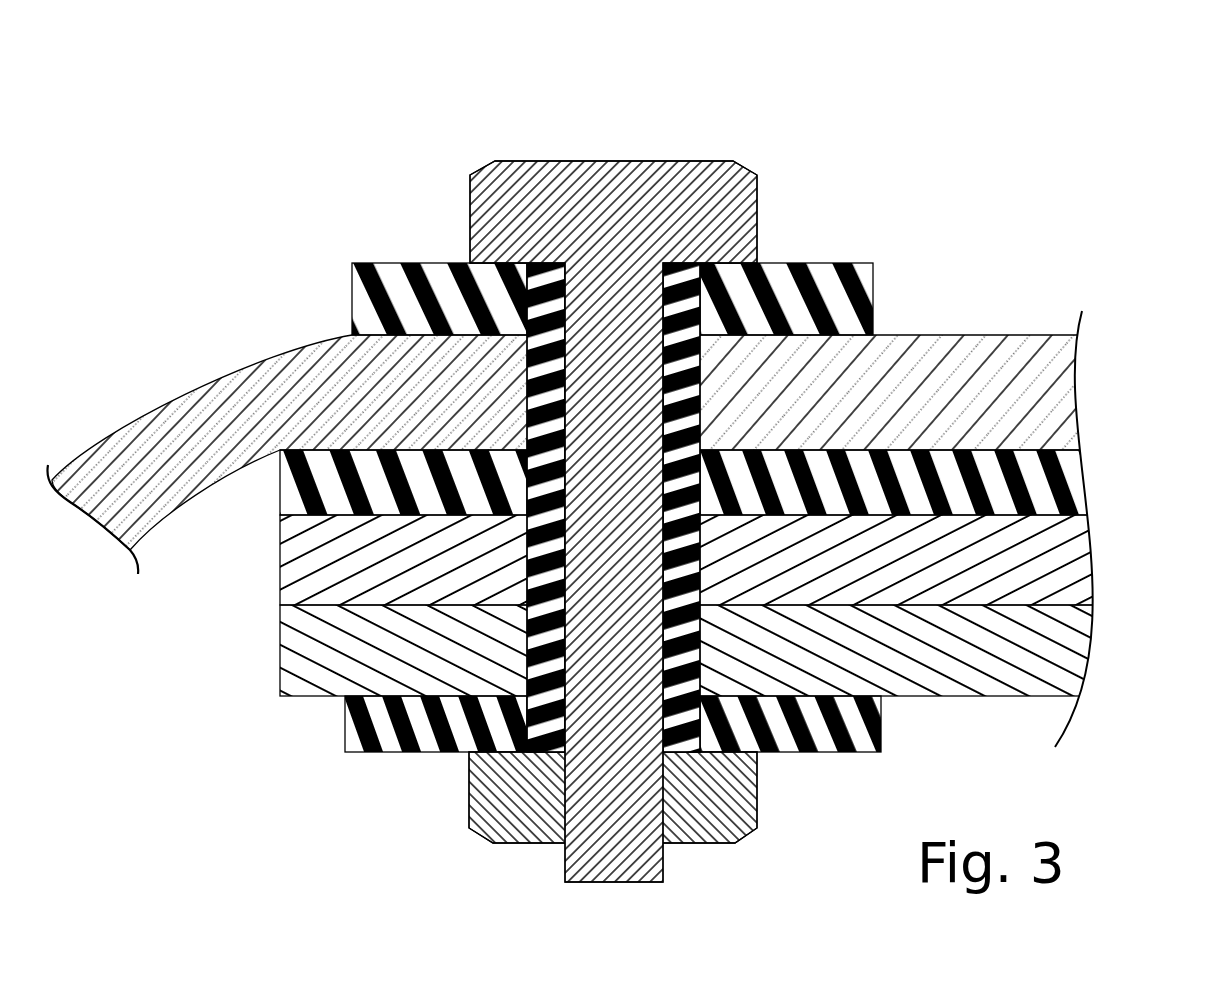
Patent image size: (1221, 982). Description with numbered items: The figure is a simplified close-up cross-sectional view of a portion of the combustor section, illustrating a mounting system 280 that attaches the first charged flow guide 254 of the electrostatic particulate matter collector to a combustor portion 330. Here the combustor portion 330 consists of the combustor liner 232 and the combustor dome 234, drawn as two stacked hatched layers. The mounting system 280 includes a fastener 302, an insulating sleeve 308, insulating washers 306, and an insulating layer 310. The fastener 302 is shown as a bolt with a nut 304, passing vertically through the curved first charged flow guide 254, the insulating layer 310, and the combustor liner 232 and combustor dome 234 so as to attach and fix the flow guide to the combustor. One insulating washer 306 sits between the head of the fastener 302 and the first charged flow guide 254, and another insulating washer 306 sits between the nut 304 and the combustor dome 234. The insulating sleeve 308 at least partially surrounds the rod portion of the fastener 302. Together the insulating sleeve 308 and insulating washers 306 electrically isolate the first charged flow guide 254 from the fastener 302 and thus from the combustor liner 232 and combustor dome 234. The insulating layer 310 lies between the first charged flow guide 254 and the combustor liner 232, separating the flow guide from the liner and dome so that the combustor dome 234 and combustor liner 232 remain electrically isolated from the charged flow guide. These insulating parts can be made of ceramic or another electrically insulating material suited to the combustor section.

The mounting system 280 is at (621, 462).
The fastener 302 is at (732, 223).
The nut 304 is at (703, 817).
The insulating washers 306 is at (433, 278).
The insulating sleeve 308 is at (550, 297).
The insulating layer 310 is at (1031, 485).
The first charged flow guide 254 is at (247, 400).
The combustor portion 330 is at (738, 663).
The combustor liner 232 is at (988, 589).
The combustor dome 234 is at (928, 679).